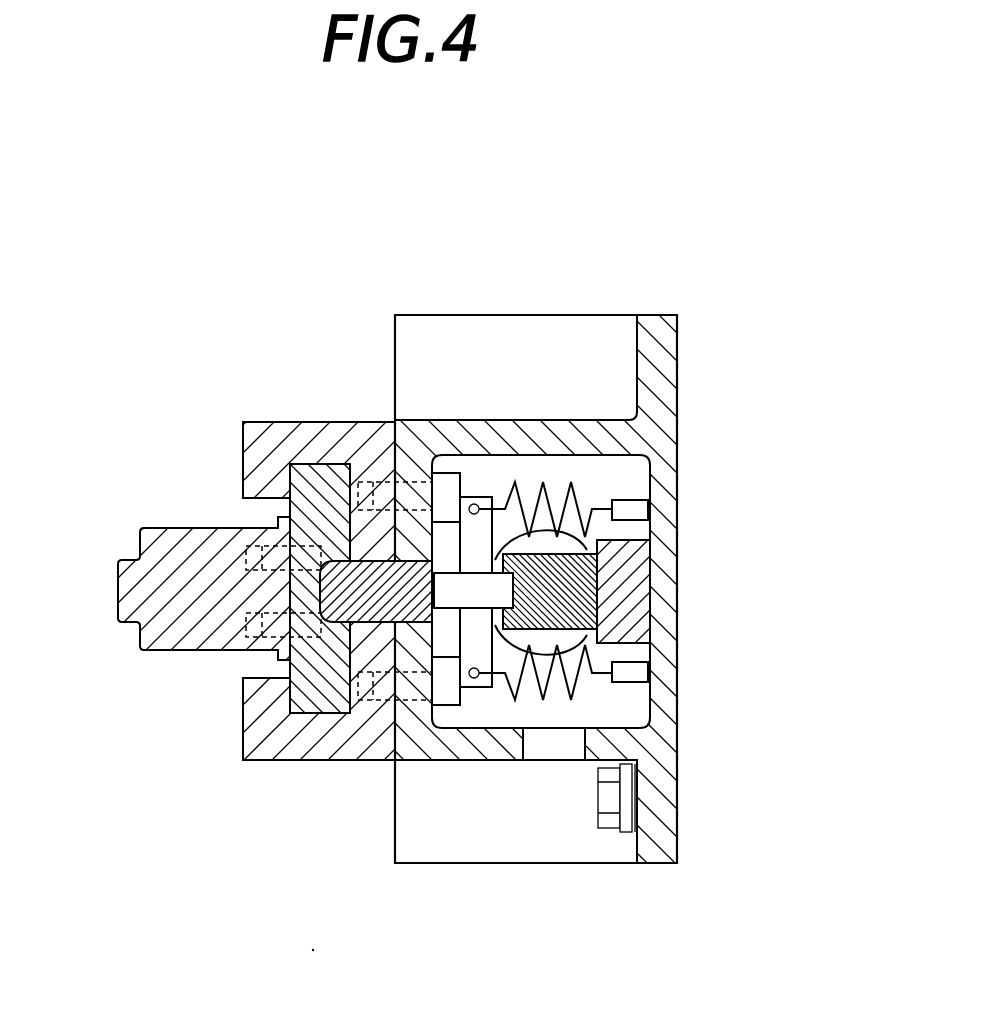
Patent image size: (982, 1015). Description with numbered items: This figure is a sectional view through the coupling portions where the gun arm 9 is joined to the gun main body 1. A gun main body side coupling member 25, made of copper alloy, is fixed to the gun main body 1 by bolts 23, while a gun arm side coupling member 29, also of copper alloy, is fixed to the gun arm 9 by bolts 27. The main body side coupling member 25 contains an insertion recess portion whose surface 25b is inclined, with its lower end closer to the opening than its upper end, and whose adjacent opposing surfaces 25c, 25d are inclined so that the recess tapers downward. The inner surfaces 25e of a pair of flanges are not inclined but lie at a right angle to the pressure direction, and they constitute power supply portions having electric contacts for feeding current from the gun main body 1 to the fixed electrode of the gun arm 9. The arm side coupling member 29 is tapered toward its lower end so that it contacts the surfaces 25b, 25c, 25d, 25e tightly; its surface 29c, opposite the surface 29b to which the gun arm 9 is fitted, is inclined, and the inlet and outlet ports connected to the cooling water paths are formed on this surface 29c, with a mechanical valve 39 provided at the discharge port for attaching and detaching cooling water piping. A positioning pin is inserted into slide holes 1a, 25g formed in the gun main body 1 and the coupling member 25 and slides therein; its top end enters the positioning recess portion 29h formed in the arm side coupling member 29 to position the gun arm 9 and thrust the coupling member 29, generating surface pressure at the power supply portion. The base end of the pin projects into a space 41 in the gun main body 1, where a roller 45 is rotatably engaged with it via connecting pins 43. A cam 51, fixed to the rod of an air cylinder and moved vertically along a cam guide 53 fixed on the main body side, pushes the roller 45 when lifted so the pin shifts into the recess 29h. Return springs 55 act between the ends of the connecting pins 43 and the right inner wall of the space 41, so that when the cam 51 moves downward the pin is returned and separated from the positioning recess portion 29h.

The gun main body 1 is at (652, 318).
The slide hole 1a is at (432, 615).
The gun arm 9 is at (128, 528).
The bolts 23 is at (480, 497).
The gun main body side coupling member 25 is at (253, 422).
The surface 25b is at (342, 715).
The surface 25c is at (292, 505).
The surface 25d is at (288, 698).
The inner surfaces of flanges 25e is at (300, 470).
The slide hole 25g is at (272, 612).
The bolts 27 is at (245, 530).
The gun arm side coupling member 29 is at (315, 490).
The surface 29b is at (292, 468).
The surface 29c is at (352, 713).
The positioning recess portion 29h is at (245, 597).
The mechanical valve 39 is at (375, 560).
The space 41 is at (528, 455).
The connecting pins 43 is at (493, 487).
The roller 45 is at (442, 540).
The cam 51 is at (596, 572).
The cam guide 53 is at (615, 600).
The return springs 55 is at (562, 487).